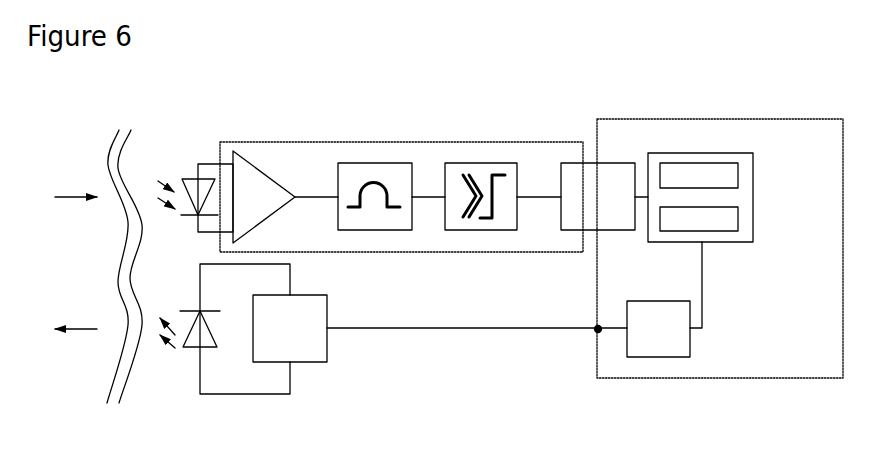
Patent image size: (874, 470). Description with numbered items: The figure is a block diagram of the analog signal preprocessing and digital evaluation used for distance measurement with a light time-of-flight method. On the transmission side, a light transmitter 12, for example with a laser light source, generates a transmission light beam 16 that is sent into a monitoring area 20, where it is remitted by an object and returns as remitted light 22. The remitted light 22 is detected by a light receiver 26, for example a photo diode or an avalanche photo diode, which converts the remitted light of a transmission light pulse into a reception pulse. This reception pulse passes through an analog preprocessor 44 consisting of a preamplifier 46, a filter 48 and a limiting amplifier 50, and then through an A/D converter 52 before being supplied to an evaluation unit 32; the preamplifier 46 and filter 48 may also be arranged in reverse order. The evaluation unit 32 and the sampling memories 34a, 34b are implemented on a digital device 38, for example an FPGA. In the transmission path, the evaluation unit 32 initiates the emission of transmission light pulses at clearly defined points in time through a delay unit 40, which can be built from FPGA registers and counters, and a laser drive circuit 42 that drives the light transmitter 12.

The light transmitter 12 is at (225, 353).
The transmission light beam 16 is at (72, 378).
The monitoring area 20 is at (79, 255).
The remitted light 22 is at (67, 242).
The light receiver 26 is at (192, 176).
The evaluation unit 32 is at (737, 175).
The sampling memory 34a is at (744, 180).
The sampling memory 34b is at (745, 235).
The digital device 38 is at (720, 227).
The delay unit 40 is at (664, 342).
The laser drive circuit 42 is at (308, 346).
The analog preprocessor 44 is at (403, 158).
The preamplifier 46 is at (266, 171).
The filter 48 is at (375, 165).
The limiting amplifier 50 is at (481, 163).
The A/D converter 52 is at (579, 163).